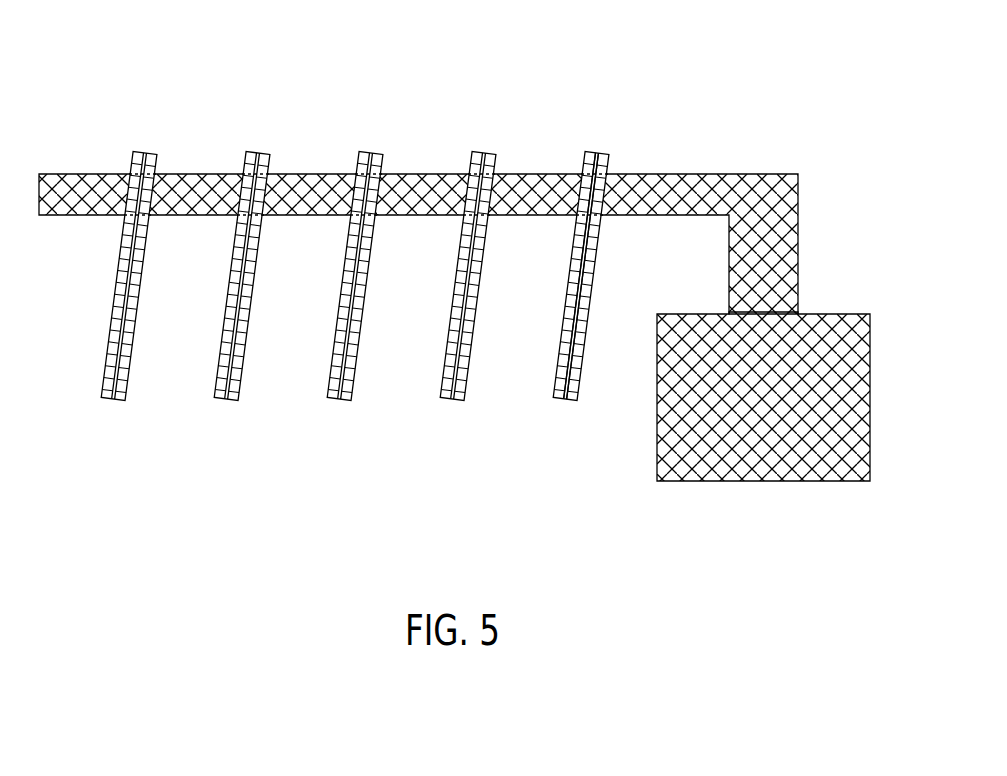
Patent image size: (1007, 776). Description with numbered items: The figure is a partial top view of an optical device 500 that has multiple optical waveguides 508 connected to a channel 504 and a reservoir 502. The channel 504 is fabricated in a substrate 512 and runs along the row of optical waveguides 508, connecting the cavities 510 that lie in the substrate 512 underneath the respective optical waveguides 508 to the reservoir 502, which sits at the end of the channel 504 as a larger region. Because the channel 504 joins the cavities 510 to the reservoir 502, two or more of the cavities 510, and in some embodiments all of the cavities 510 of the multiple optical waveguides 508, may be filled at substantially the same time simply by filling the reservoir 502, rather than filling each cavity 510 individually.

The optical device 500 is at (104, 82).
The reservoir 502 is at (732, 479).
The channel 504 is at (673, 177).
The optical waveguides 508 is at (112, 402).
The cavities 510 is at (600, 230).
The substrate 512 is at (402, 498).